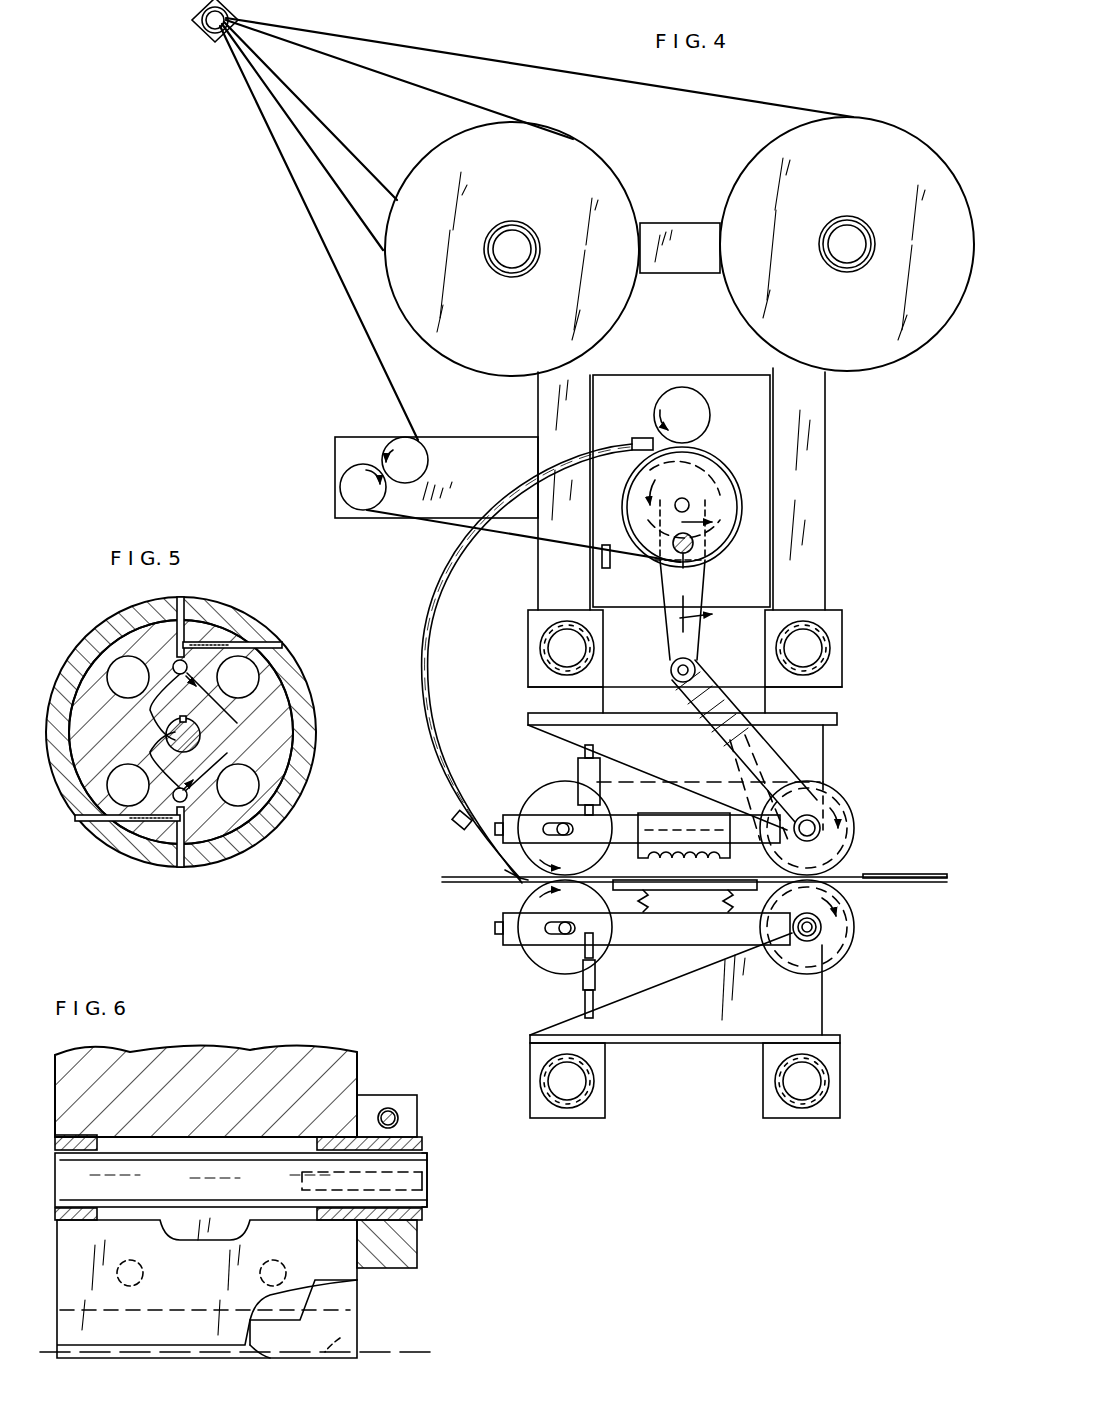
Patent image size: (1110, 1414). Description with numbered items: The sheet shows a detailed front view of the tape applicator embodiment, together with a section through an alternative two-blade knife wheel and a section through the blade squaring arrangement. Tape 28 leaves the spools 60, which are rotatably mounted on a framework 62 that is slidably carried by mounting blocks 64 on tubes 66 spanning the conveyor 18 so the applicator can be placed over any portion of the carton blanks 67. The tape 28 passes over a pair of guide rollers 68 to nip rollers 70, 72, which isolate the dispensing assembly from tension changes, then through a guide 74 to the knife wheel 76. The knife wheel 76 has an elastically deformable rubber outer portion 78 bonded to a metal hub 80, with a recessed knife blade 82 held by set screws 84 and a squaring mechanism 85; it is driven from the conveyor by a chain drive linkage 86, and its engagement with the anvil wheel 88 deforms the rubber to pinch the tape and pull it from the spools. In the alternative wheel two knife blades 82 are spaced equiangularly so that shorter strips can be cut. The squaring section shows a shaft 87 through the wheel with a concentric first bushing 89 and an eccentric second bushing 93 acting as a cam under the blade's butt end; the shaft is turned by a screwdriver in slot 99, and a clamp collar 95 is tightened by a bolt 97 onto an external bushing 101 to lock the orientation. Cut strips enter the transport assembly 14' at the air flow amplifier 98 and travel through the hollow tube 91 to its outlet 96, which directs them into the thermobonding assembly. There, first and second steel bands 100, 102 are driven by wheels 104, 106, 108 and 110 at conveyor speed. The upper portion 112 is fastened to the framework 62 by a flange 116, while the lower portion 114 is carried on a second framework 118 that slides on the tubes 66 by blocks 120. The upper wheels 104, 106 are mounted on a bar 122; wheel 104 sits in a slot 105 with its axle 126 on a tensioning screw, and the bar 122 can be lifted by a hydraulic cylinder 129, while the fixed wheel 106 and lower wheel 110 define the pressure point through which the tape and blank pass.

In FIG. 4, the transport assembly 14' is at (493, 663).
In FIG. 4, the conveyor 18 is at (470, 884).
In FIG. 4, the tape 28 is at (448, 97).
In FIG. 4, the spool 60 is at (583, 138).
In FIG. 4, the framework 62 is at (682, 222).
In FIG. 4, the mounting block 64 is at (528, 642).
In FIG. 4, the tube 66 is at (553, 662).
In FIG. 4, the carton blank 67 is at (865, 874).
In FIG. 4, the guide roller 68 is at (208, 35).
In FIG. 4, the nip roller 70 is at (340, 487).
In FIG. 4, the nip roller 72 is at (428, 460).
In FIG. 4, the guide 74 is at (606, 570).
In FIG. 4, the knife wheel 76 is at (731, 547).
In FIG. 5, the knife wheel 76 is at (258, 620).
In FIG. 6, the knife wheel 76 is at (362, 1338).
In FIG. 4, the elastically deformable outer portion 78 is at (742, 496).
In FIG. 6, the elastically deformable outer portion 78 is at (322, 1355).
In FIG. 4, the metal hub 80 is at (710, 472).
In FIG. 6, the metal hub 80 is at (285, 1068).
In FIG. 5, the knife blade 82 is at (188, 605).
In FIG. 6, the knife blade 82 is at (202, 1289).
In FIG. 6, the set screw 84 is at (140, 1262).
In FIG. 5, the squaring mechanism 85 is at (211, 733).
In FIG. 6, the squaring mechanism 85 is at (437, 1205).
In FIG. 4, the chain drive linkage 86 is at (712, 644).
In FIG. 5, the shaft 87 is at (158, 732).
In FIG. 6, the shaft 87 is at (125, 1187).
In FIG. 4, the anvil wheel 88 is at (710, 415).
In FIG. 6, the anvil wheel 88 is at (355, 1322).
In FIG. 6, the first bushing 89 is at (110, 1200).
In FIG. 4, the hollow tube 91 is at (420, 740).
In FIG. 6, the second bushing 93 is at (312, 1210).
In FIG. 6, the clamp collar 95 is at (418, 1248).
In FIG. 4, the outlet 96 is at (505, 876).
In FIG. 6, the bolt 97 is at (390, 1108).
In FIG. 4, the air flow amplifier 98 is at (637, 435).
In FIG. 6, the slot 99 is at (425, 1182).
In FIG. 4, the first steel band 100 is at (622, 785).
In FIG. 6, the bushing 101 is at (422, 1145).
In FIG. 4, the second steel band 102 is at (638, 982).
In FIG. 4, the wheel 104 is at (545, 790).
In FIG. 4, the slot 105 is at (556, 824).
In FIG. 4, the wheel 106 is at (836, 790).
In FIG. 4, the wheel 108 is at (530, 957).
In FIG. 4, the wheel 110 is at (845, 938).
In FIG. 4, the upper portion 112 is at (893, 829).
In FIG. 4, the lower portion 114 is at (893, 920).
In FIG. 4, the flange 116 is at (823, 745).
In FIG. 4, the second framework 118 is at (822, 1003).
In FIG. 4, the block 120 is at (605, 1080).
In FIG. 4, the bar 122 is at (638, 812).
In FIG. 4, the axle 126 is at (576, 845).
In FIG. 4, the hydraulic cylinder 129 is at (575, 768).